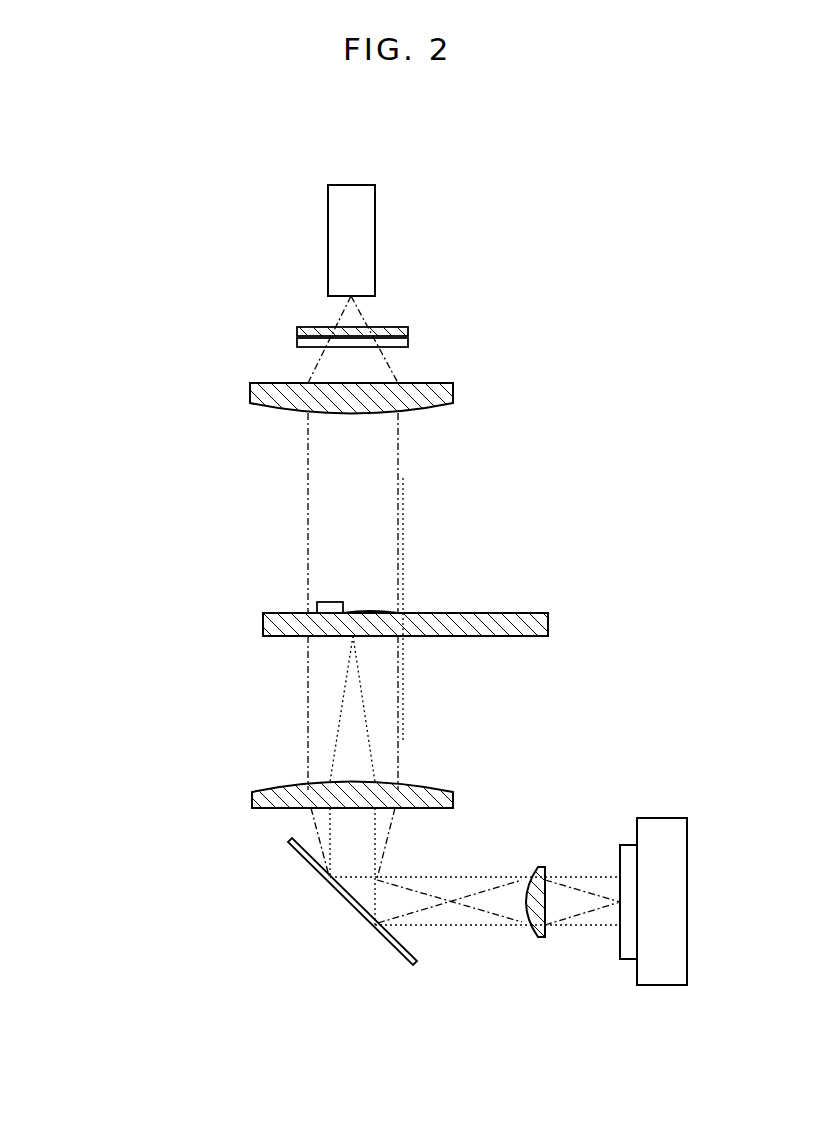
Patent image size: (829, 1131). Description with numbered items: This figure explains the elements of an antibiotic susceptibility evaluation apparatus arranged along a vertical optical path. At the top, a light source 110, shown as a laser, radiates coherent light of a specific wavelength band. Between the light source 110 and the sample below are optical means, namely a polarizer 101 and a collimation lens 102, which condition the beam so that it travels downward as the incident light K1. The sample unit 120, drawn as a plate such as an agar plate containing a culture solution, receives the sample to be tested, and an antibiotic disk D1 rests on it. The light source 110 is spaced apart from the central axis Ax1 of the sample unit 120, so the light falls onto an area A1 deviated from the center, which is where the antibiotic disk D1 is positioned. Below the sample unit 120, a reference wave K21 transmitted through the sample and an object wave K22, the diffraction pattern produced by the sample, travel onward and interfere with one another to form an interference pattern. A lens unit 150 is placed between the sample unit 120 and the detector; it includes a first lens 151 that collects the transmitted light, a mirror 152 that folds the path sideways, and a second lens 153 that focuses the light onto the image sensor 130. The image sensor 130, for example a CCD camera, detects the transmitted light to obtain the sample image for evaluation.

The light source 110 is at (376, 232).
The polarizer 101 is at (297, 331).
The collimation lens 102 is at (250, 393).
The incident light K1 is at (308, 485).
The antibiotic disk D1 is at (317, 603).
The area A1 is at (378, 612).
The sample unit 120 is at (540, 623).
The reference wave K21 is at (308, 693).
The object wave K22 is at (338, 733).
The central axis Ax1 is at (408, 690).
The lens 151 is at (254, 798).
The mirror 152 is at (300, 858).
The lens unit 150 is at (315, 905).
The lens 153 is at (537, 866).
The image sensor 130 is at (659, 818).